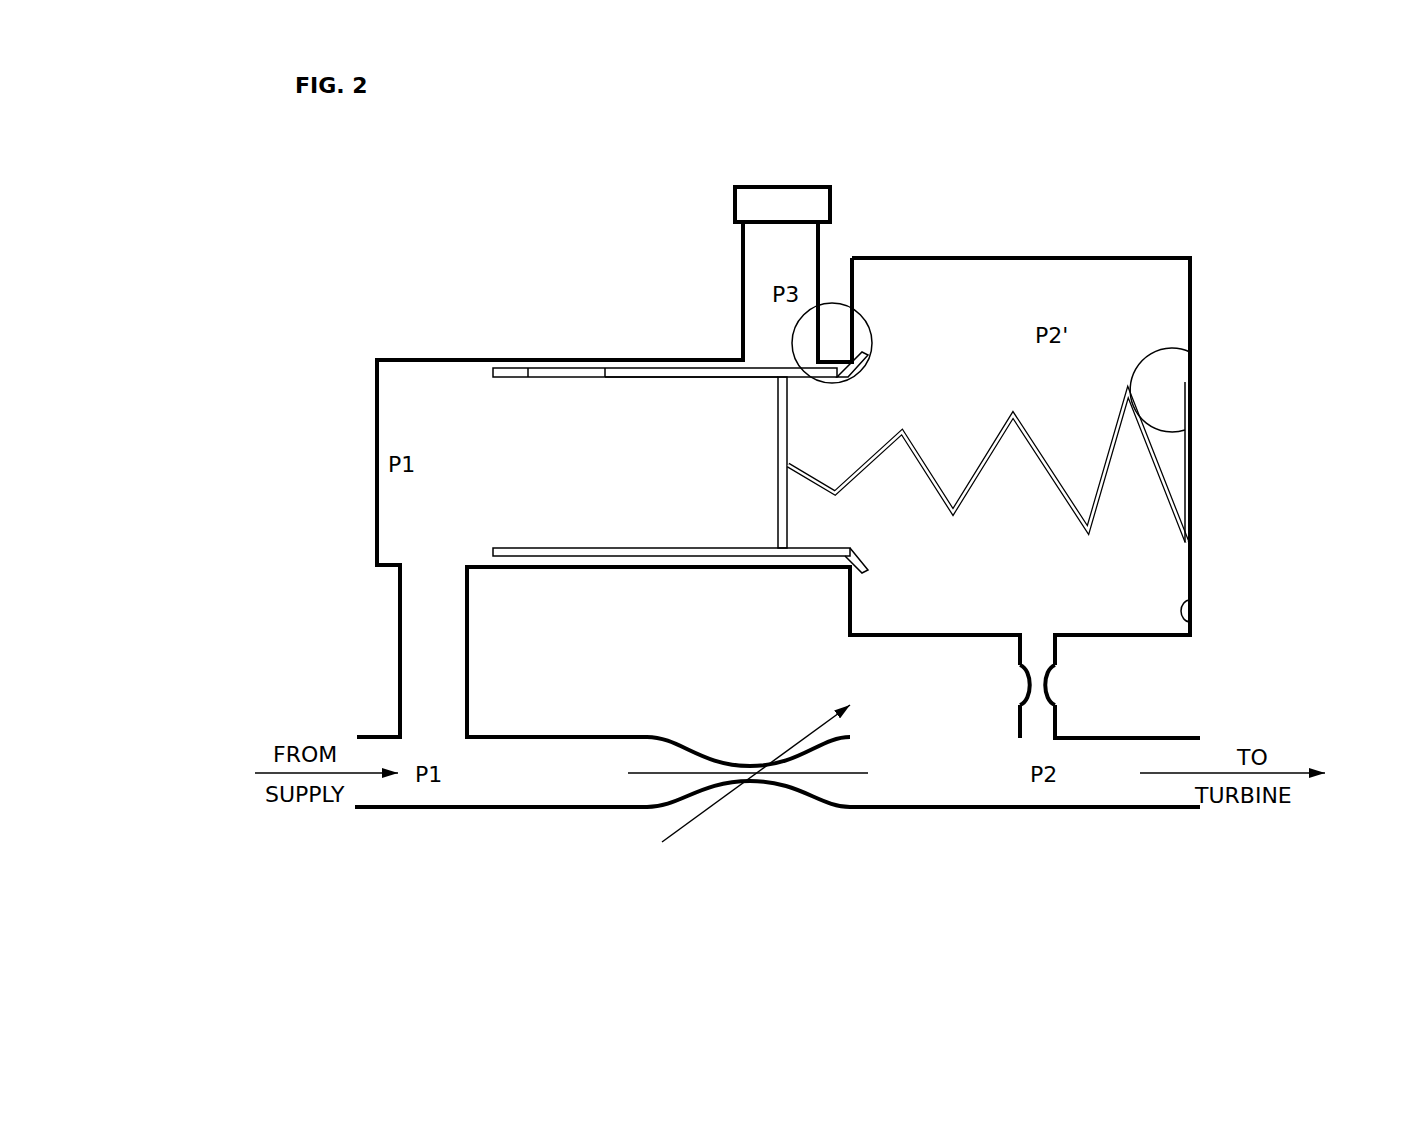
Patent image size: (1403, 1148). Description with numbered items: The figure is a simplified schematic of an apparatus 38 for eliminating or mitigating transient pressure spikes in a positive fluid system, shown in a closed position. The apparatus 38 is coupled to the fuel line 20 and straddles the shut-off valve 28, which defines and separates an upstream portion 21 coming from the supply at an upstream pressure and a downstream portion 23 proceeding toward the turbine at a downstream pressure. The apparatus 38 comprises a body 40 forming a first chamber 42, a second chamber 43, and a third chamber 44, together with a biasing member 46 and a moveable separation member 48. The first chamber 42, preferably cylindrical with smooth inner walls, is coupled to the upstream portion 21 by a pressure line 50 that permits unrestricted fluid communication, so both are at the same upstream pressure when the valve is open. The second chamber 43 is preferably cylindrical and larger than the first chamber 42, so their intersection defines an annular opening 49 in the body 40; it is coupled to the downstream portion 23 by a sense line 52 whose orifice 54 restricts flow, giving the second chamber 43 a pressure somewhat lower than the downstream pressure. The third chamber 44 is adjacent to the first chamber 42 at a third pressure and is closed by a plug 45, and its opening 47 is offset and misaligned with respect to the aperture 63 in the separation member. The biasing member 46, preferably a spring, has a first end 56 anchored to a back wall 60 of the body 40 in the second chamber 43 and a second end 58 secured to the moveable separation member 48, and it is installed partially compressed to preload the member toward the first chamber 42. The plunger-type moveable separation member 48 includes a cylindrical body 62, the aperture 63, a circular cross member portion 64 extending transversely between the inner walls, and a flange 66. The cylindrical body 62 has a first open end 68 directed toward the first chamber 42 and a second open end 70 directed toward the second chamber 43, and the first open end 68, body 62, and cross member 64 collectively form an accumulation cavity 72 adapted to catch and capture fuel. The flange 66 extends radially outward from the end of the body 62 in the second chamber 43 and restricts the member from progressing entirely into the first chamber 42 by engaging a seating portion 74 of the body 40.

The fuel line 20 is at (573, 812).
The upstream portion 21 is at (427, 808).
The downstream portion 23 is at (1122, 810).
The shut-off valve 28 is at (810, 790).
The apparatus 38 is at (553, 143).
The body 40 is at (468, 358).
The first chamber 42 is at (433, 405).
The second chamber 43 is at (1158, 290).
The third chamber 44 is at (788, 253).
The plug 45 is at (783, 205).
The biasing member 46 is at (1154, 512).
The opening 47 is at (770, 350).
The moveable separation member 48 is at (678, 380).
The annular opening 49 is at (803, 316).
The pressure line 50 is at (400, 613).
The sense line 52 is at (1062, 716).
The orifice 54 is at (1025, 688).
The first end 56 is at (1190, 352).
The second end 58 is at (818, 470).
The back wall 60 is at (1191, 620).
The cylindrical body 62 is at (605, 550).
The aperture 63 is at (578, 380).
The circular cross member portion 64 is at (775, 508).
The flange 66 is at (866, 373).
The first open end 68 is at (510, 498).
The second open end 70 is at (888, 516).
The accumulation cavity 72 is at (518, 403).
The seating portion 74 is at (858, 590).